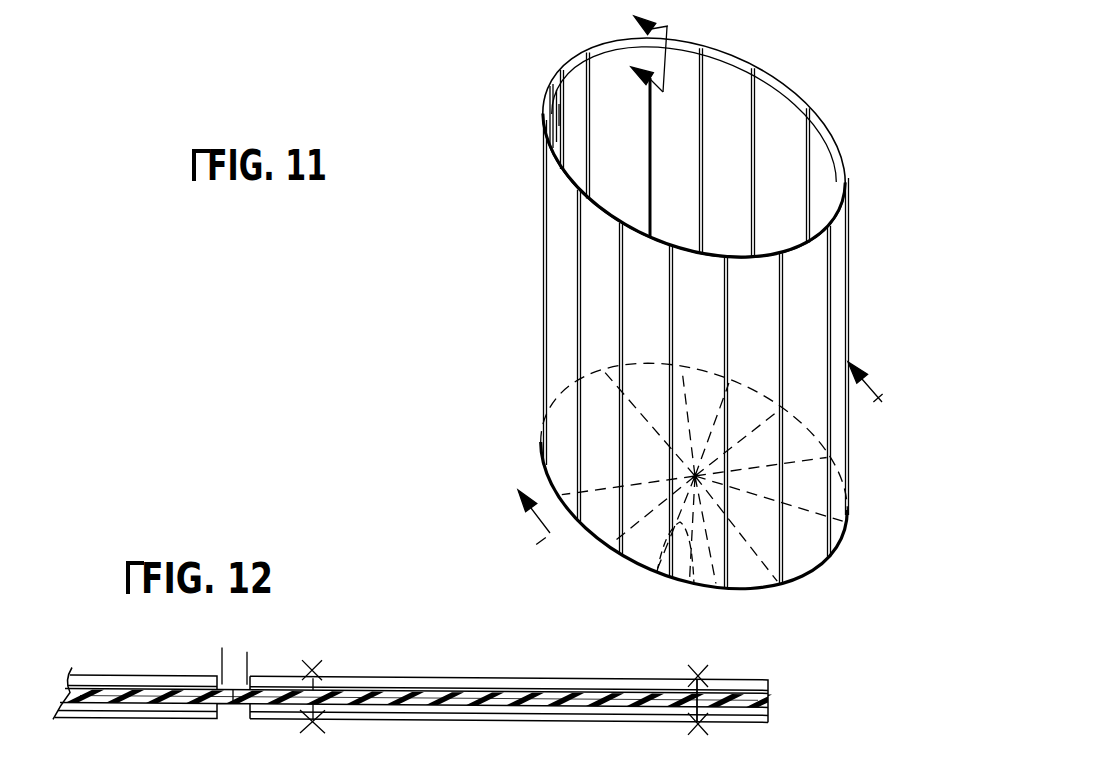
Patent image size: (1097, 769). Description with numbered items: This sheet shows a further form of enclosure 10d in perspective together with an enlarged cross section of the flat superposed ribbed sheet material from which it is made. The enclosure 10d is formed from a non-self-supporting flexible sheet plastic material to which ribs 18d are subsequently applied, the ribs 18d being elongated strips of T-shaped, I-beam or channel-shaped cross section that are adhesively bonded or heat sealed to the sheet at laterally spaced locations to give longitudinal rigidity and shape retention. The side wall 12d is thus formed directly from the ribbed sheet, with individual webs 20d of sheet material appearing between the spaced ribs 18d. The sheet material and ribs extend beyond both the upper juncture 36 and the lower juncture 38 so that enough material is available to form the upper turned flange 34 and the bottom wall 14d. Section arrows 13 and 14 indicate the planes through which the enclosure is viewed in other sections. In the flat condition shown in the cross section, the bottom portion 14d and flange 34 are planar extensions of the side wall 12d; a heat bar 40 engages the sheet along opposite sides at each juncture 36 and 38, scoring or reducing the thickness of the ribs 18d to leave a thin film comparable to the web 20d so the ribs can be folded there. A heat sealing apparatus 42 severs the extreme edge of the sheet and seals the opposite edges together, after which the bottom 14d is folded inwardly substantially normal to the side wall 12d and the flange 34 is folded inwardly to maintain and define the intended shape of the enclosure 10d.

In FIG. 11, the enclosure 10d is at (511, 229).
In FIG. 11, the side wall 12d is at (848, 338).
In FIG. 12, the side wall 12d is at (440, 690).
In FIG. 11, the section line 13 is at (669, 127).
In FIG. 11, the section line 14 is at (709, 471).
In FIG. 11, the bottom wall 14d is at (691, 572).
In FIG. 11, the ribs 18d is at (576, 297).
In FIG. 12, the ribs 18d is at (403, 716).
In FIG. 11, the webs 20d is at (593, 412).
In FIG. 11, the upper turned flange 34 is at (788, 100).
In FIG. 11, the upper juncture 36 is at (546, 97).
In FIG. 12, the upper juncture 36 is at (690, 678).
In FIG. 11, the lower juncture 38 is at (628, 566).
In FIG. 12, the lower juncture 38 is at (322, 719).
In FIG. 12, the heat bar 40 is at (313, 672).
In FIG. 12, the heat sealing apparatus 42 is at (247, 653).